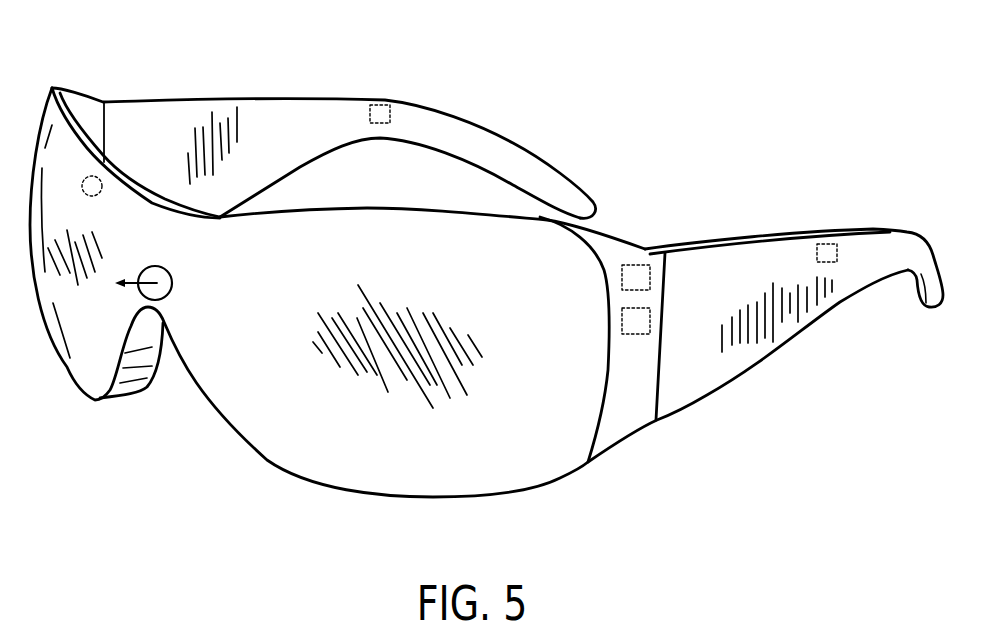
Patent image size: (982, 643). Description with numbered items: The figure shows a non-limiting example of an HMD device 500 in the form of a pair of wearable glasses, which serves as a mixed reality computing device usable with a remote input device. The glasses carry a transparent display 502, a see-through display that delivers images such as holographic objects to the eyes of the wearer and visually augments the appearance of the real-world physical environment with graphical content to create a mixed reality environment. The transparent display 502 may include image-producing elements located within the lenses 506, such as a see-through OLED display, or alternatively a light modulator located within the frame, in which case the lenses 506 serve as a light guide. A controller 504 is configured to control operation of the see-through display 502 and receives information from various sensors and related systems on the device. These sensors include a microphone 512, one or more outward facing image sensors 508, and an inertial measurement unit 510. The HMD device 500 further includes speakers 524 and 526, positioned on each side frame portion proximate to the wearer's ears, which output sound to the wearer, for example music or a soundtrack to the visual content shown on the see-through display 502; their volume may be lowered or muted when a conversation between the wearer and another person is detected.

The HMD device 500 is at (530, 84).
The transparent display 502 is at (262, 427).
The controller 504 is at (636, 264).
The lenses 506 is at (138, 368).
The outward facing image sensors 508 is at (173, 283).
The inertial measurement unit 510 is at (650, 322).
The microphone 512 is at (93, 176).
The speaker 524 is at (383, 103).
The speaker 526 is at (830, 243).